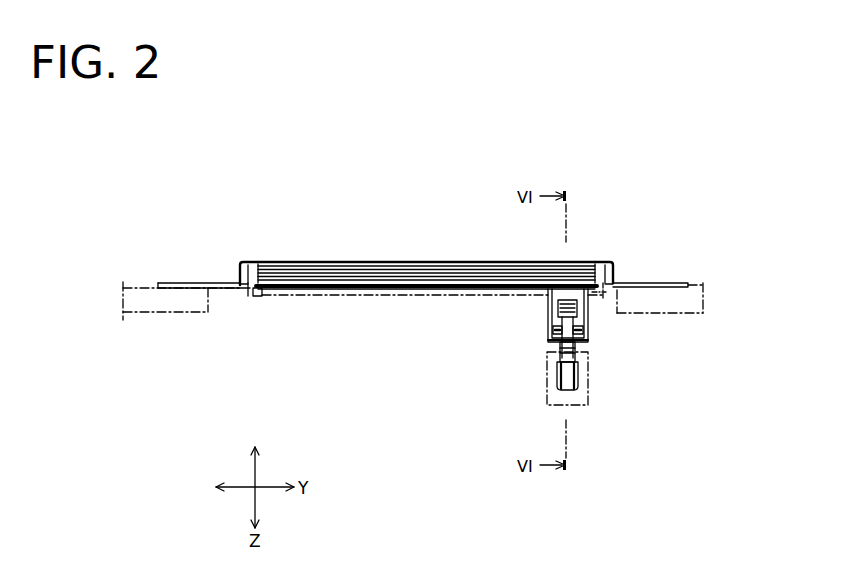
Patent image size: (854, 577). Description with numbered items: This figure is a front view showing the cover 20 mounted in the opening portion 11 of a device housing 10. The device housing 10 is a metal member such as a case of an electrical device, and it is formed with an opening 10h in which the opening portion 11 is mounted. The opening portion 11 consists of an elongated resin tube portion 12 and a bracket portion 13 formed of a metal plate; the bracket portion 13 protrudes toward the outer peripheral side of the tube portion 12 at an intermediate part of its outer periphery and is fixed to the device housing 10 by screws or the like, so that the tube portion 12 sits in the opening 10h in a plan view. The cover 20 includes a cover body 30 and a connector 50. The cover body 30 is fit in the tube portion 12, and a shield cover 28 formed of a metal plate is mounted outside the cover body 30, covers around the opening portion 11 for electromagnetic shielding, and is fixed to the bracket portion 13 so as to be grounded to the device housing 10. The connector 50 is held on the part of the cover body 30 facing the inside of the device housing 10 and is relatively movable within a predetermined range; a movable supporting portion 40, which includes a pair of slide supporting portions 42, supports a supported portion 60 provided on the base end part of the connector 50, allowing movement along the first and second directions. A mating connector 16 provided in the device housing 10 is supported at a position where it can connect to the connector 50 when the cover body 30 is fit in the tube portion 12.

The device housing 10 is at (697, 278).
The opening 10h is at (622, 321).
The opening portion 11 is at (250, 298).
The tube portion 12 is at (258, 298).
The bracket portion 13 is at (217, 290).
The mating connector 16 is at (588, 401).
The cover 20 is at (313, 260).
The shield cover 28 is at (631, 252).
The cover body 30 is at (451, 261).
The movable supporting portion 40 is at (548, 317).
The slide supporting portions 42 is at (549, 321).
The connector 50 is at (585, 372).
The supported portion 60 is at (552, 342).